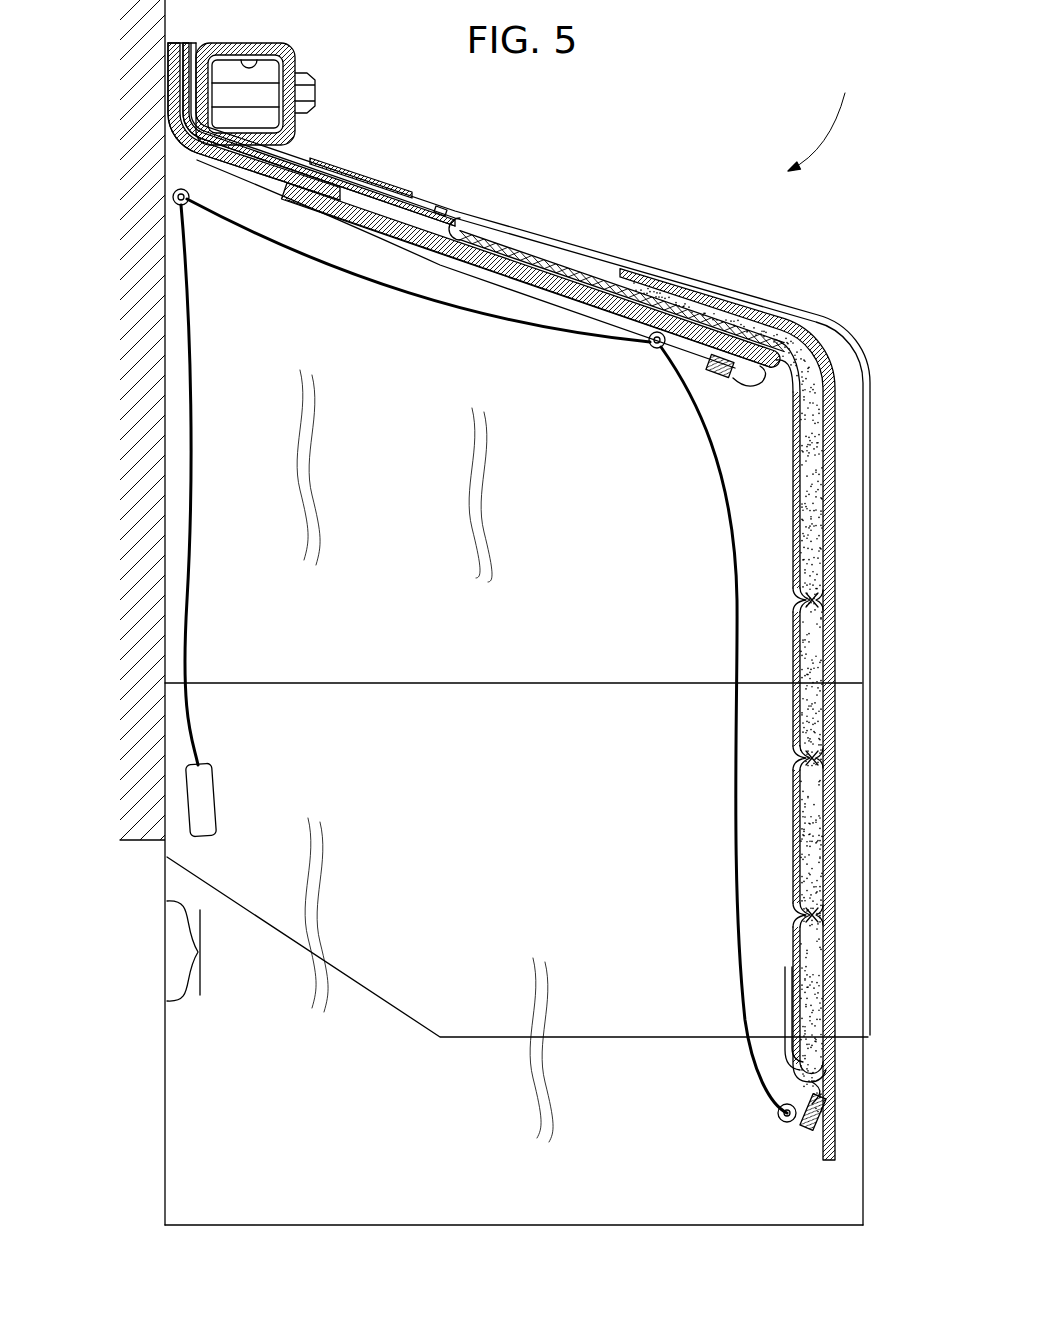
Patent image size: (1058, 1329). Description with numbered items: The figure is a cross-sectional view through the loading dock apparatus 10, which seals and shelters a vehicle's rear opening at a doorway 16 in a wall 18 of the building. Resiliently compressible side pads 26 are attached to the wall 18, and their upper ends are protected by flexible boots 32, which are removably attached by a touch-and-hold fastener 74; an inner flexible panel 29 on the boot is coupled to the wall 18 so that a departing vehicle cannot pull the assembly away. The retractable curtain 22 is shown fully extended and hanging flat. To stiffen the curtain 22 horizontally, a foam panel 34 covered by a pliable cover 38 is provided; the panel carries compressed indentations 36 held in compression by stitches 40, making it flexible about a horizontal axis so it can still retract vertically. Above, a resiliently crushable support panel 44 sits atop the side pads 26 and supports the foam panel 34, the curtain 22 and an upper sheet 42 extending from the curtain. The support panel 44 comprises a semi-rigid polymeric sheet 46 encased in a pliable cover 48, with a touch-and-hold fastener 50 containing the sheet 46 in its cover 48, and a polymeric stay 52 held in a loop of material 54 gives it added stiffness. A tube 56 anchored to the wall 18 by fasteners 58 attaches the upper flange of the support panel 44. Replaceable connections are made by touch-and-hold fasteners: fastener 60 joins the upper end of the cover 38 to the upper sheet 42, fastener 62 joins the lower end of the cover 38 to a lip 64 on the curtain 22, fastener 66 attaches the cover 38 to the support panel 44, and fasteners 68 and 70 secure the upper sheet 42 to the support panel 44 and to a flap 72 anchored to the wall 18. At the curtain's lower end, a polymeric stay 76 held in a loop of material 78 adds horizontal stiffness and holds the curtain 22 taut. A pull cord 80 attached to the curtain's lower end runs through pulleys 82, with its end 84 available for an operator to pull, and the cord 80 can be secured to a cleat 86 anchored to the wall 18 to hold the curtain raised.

The loading dock apparatus 10 is at (816, 123).
The doorway 16 is at (134, 1127).
The wall 18 is at (178, 640).
The retractable curtain 22 is at (836, 604).
The side pads 26 is at (552, 307).
The inner flexible panel 29 is at (392, 683).
The flexible boots 32 is at (871, 398).
The foam panel 34 is at (808, 566).
The compressed indentations 36 is at (800, 758).
The pliable cover 38 is at (792, 522).
The stitches 40 is at (829, 758).
The upper sheet 42 is at (600, 278).
The support panel 44 is at (420, 256).
The semi-rigid polymeric sheet 46 is at (180, 156).
The pliable cover 48 is at (185, 147).
The touch-and-hold fastener 50 is at (185, 48).
The polymeric stay 52 is at (718, 372).
The loop of material 54 is at (748, 398).
The tube 56 is at (249, 66).
The fasteners 58 is at (314, 85).
The touch-and-hold fastener 60 is at (456, 222).
The touch-and-hold fastener 62 is at (790, 968).
The lip 64 is at (785, 990).
The touch-and-hold fastener 66 is at (440, 214).
The touch-and-hold fastener 68 is at (317, 178).
The touch-and-hold fastener 70 is at (284, 194).
The flap 72 is at (297, 165).
The touch-and-hold fastener 74 is at (412, 196).
The polymeric stay 76 is at (812, 1113).
The loop of material 78 is at (822, 1130).
The pull cord 80 is at (463, 313).
The pulleys 82 is at (186, 205).
The end of cord 84 is at (220, 790).
The cleat 86 is at (203, 953).